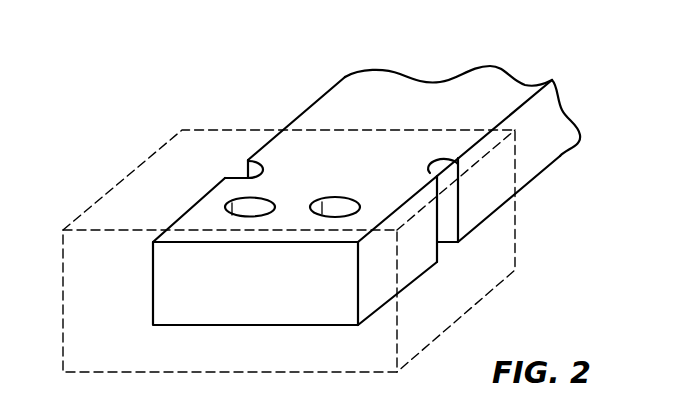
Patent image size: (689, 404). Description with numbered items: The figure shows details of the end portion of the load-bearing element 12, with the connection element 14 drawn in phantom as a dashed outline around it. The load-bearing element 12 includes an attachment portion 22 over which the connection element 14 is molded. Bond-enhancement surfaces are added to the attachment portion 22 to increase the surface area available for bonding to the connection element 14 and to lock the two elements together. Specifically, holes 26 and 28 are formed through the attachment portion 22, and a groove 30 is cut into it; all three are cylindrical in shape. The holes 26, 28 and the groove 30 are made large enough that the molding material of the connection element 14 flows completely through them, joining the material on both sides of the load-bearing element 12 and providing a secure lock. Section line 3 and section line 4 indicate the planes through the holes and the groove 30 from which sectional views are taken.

The load-bearing element 12 is at (477, 75).
The connection element 14 is at (515, 222).
The attachment portion 22 is at (228, 193).
The hole 26 is at (346, 200).
The hole 28 is at (235, 208).
The groove 30 is at (448, 217).
The section line 3- 3 is at (117, 272).
The section line 4- 4 is at (275, 271).